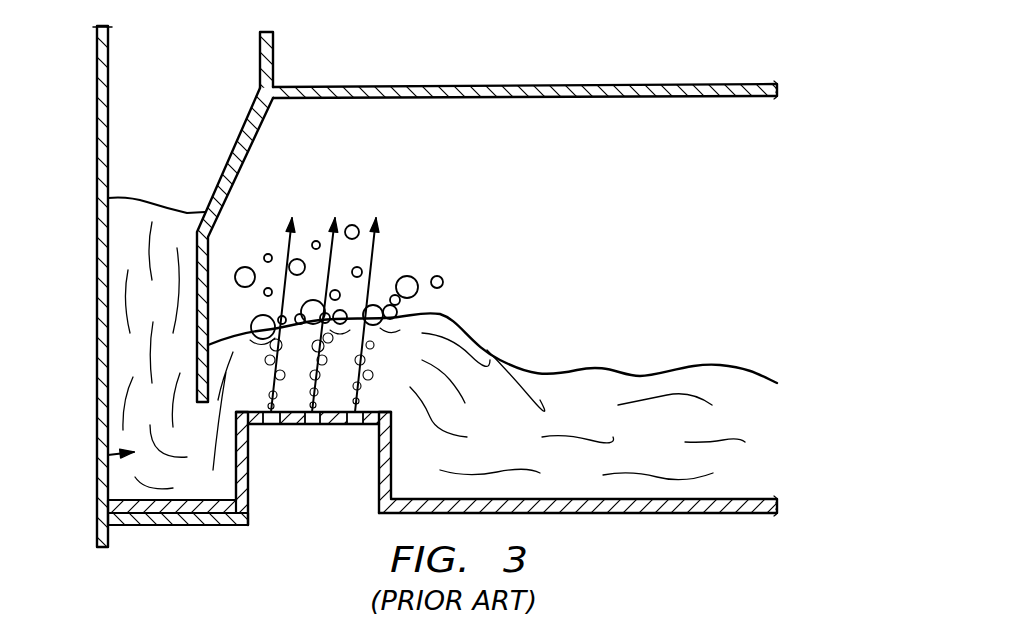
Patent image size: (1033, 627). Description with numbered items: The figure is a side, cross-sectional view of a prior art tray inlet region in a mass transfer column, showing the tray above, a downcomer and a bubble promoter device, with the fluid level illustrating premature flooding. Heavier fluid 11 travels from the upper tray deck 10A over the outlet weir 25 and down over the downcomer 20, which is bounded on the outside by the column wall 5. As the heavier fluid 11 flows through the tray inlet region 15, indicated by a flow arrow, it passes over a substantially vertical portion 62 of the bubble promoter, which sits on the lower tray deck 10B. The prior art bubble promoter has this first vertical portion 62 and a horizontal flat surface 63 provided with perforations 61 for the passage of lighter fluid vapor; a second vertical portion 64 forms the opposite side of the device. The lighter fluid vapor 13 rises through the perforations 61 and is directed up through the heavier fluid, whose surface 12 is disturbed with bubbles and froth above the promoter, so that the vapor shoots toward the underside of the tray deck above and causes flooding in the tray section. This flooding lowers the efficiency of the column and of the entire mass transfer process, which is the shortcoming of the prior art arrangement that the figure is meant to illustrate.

The vessel side wall 5 is at (97, 385).
The upper tray deck 10A is at (510, 90).
The bottom plate 10B is at (623, 505).
The heavier fluid 11 is at (128, 287).
The liquid surface in main bath 12 is at (583, 375).
The gas jets with bubbles 13 is at (372, 262).
The tray inlet region 15 is at (105, 460).
The downcomer 20 is at (237, 157).
The outlet weir 25 is at (265, 62).
The perforations 61 is at (352, 427).
The first vertical portion 62 is at (245, 477).
The horizontal flat surface 63 is at (295, 427).
The nozzle box right wall 64 is at (383, 477).